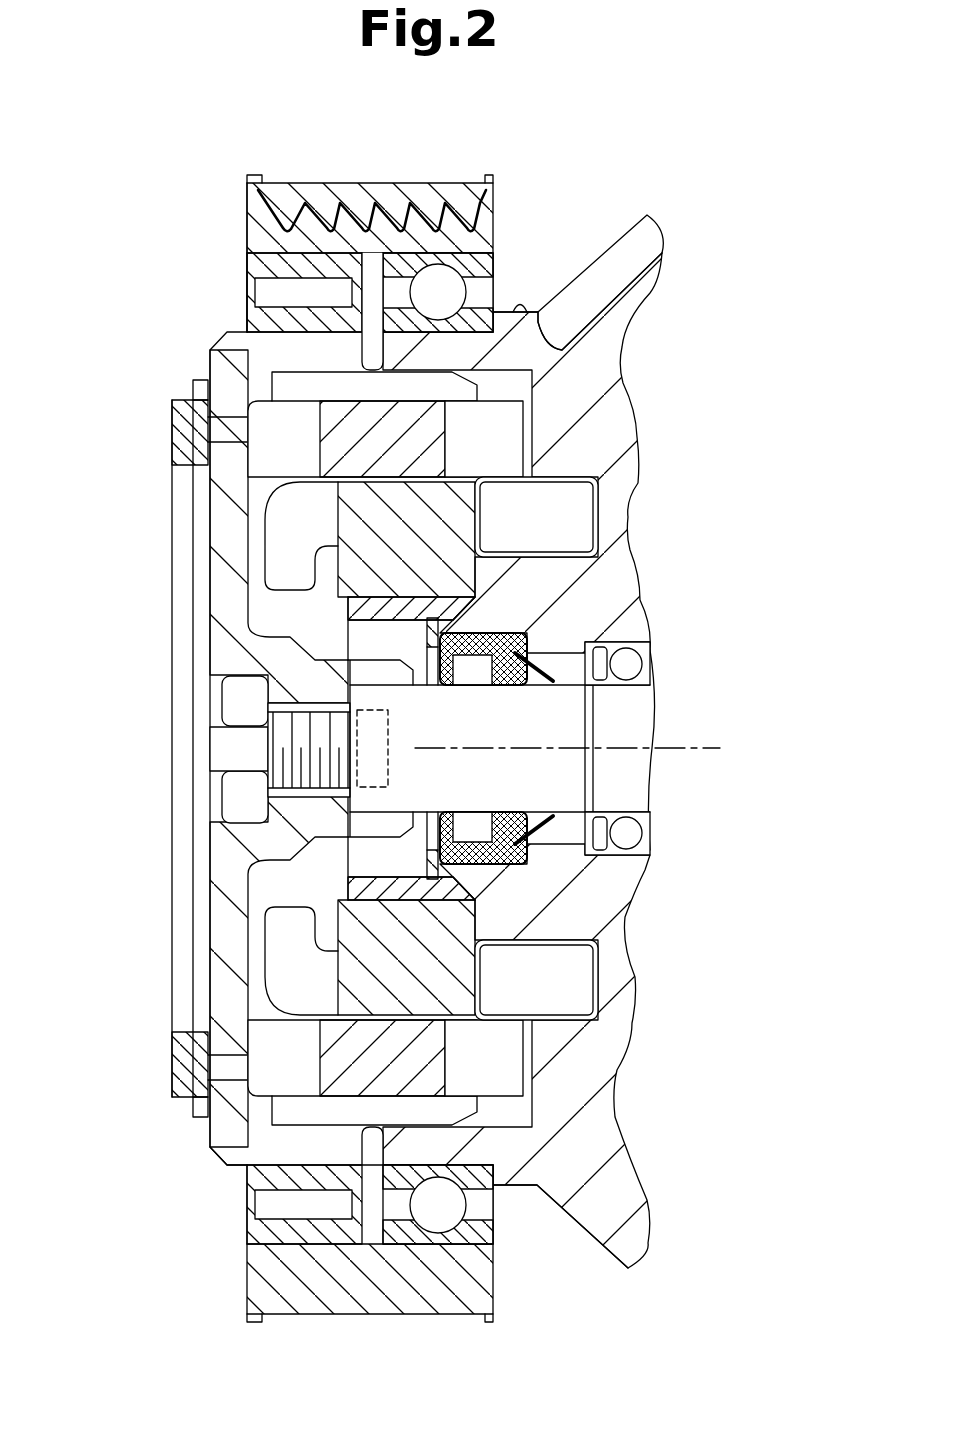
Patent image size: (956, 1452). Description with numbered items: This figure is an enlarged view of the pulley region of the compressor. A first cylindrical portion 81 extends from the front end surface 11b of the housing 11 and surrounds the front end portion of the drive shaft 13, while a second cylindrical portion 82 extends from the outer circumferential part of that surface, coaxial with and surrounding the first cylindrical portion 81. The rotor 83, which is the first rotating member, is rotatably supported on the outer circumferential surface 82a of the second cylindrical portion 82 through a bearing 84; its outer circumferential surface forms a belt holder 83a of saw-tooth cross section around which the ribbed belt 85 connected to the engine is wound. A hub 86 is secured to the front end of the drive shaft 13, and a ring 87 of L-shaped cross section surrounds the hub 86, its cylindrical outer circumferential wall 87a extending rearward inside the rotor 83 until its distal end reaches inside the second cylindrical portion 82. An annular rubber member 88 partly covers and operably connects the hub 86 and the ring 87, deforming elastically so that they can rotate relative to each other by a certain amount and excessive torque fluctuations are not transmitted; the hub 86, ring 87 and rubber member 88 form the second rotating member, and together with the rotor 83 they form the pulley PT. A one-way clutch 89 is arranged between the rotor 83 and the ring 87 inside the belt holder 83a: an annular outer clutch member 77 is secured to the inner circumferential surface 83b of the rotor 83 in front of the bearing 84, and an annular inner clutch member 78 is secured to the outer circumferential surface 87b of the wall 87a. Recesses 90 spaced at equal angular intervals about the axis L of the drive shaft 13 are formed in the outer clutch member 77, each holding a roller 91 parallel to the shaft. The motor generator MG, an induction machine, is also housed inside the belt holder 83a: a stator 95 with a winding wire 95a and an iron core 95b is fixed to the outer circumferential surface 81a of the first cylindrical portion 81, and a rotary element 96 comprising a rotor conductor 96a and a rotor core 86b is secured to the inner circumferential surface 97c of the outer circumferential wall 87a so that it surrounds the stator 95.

The housing 11 is at (652, 228).
The front end surface 11b is at (600, 248).
The drive shaft 13 is at (655, 787).
The outer clutch member 77 is at (250, 1248).
The inner clutch member 78 is at (250, 1195).
The first cylindrical portion 81 is at (395, 617).
The outer circumferential surface 81a is at (480, 590).
The second cylindrical portion 82 is at (470, 1170).
The outer circumferential surface 82a is at (570, 352).
The rotor 83 is at (495, 192).
The belt holder 83a is at (462, 195).
The inner circumferential surface 83b is at (250, 262).
The bearing 84 is at (460, 292).
The ribbed belt 85 is at (390, 195).
The hub 86 is at (200, 583).
The rotor core 86b is at (330, 413).
The ring 87 is at (213, 346).
The outer circumferential wall 87a is at (230, 1148).
The outer circumferential surface 87b is at (282, 320).
The rubber member 88 is at (180, 1064).
The one-way clutch 89 is at (246, 1224).
The recesses 90 is at (307, 283).
The roller 91 is at (310, 303).
The stator 95 is at (395, 748).
The winding wire 95a is at (585, 505).
The iron core 95b is at (352, 505).
The rotary element 96 is at (408, 745).
The rotor conductor 96a is at (513, 417).
The inner circumferential surface 97c is at (536, 748).
The axis L is at (675, 748).
The motor generator MG is at (274, 490).
The pulley PT is at (218, 197).